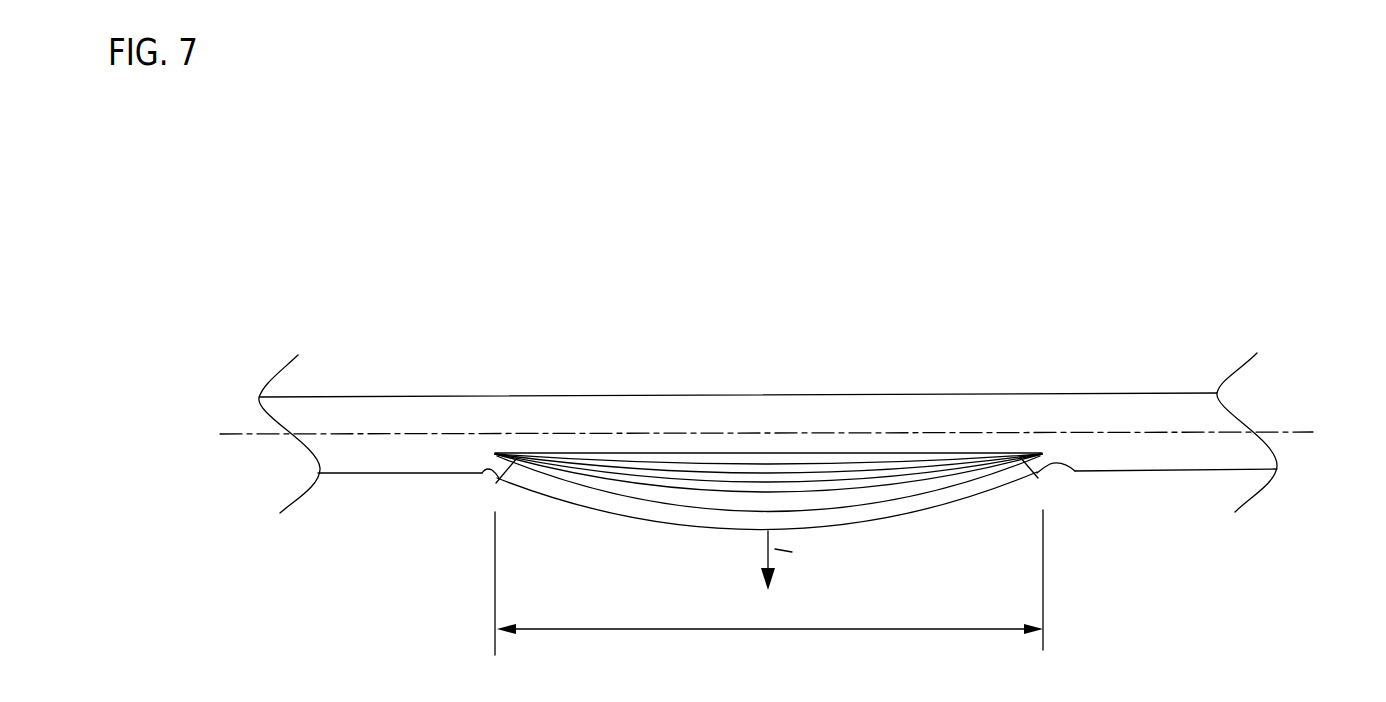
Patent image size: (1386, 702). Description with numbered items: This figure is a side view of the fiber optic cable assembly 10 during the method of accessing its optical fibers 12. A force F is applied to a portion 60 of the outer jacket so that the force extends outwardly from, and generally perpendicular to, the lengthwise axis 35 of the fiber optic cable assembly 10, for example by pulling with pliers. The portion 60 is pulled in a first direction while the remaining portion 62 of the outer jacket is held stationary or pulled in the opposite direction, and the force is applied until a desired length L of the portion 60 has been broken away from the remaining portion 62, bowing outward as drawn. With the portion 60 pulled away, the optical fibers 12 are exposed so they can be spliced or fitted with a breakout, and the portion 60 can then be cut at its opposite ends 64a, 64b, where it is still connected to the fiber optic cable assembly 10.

The fiber optic cable assembly 10 is at (549, 345).
The remaining portion 62 is at (827, 394).
The lengthwise axis 35 is at (1302, 431).
The portion 60 is at (877, 520).
The first opposite end 64a is at (485, 470).
The second opposite end 64b is at (1080, 475).
The optical fiber 12 is at (658, 492).